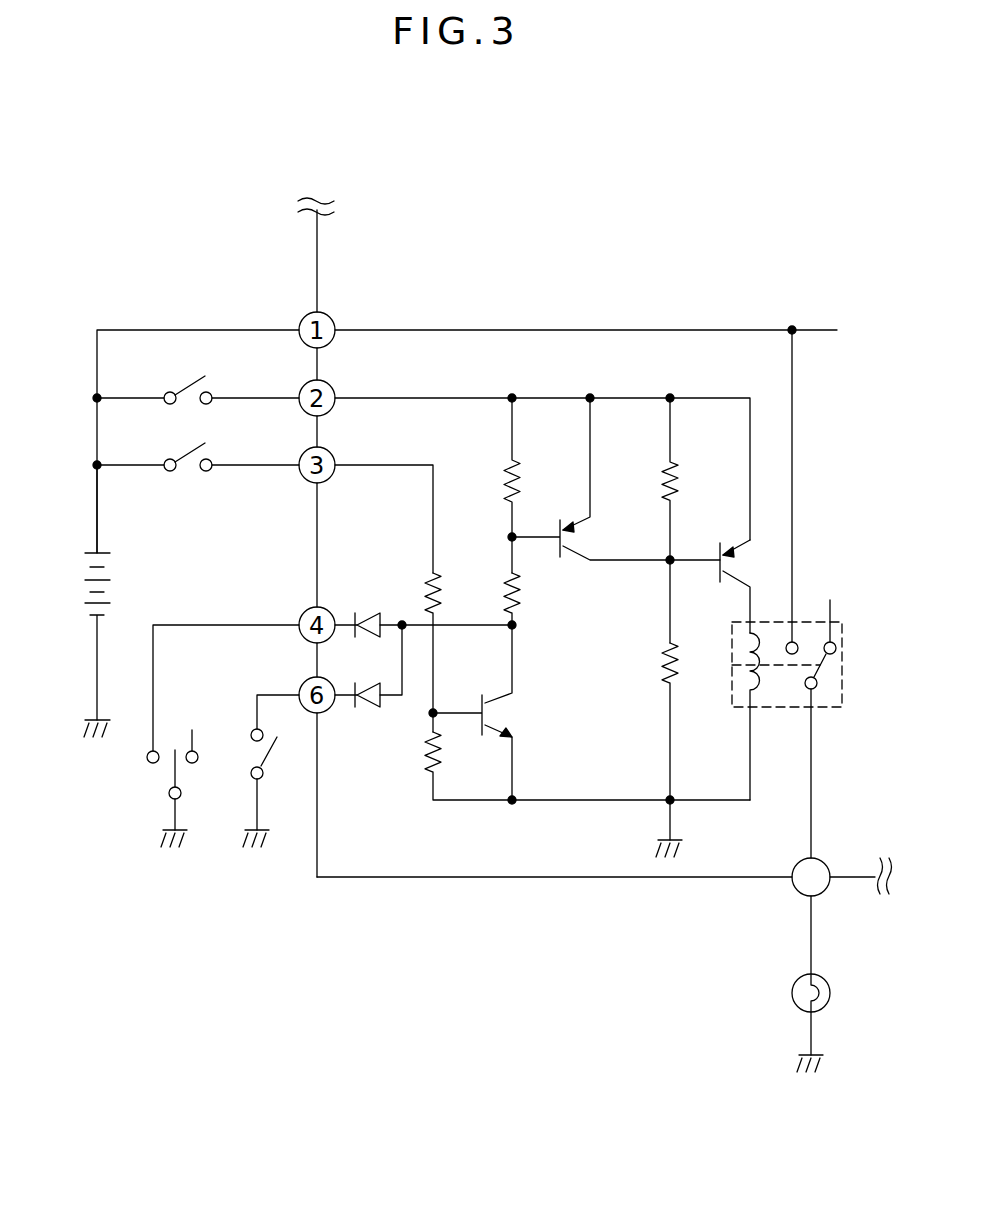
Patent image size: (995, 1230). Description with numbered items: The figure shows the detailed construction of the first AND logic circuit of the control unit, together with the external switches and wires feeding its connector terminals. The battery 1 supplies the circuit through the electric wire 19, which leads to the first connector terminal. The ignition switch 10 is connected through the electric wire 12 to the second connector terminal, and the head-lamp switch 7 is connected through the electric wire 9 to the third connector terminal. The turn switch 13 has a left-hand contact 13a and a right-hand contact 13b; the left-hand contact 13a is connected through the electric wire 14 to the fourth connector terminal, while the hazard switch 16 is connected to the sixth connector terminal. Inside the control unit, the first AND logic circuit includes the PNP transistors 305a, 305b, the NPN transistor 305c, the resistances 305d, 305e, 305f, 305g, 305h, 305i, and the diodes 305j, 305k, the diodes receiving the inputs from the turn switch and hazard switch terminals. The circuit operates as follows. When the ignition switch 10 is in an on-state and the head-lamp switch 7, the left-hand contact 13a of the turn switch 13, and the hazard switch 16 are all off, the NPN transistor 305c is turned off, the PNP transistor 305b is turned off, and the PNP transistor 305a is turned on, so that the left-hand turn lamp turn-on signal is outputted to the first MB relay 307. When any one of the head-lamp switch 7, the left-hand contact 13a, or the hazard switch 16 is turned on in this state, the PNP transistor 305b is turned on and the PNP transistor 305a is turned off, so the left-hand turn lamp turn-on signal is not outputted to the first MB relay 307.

The battery 1 is at (78, 586).
The head-lamp switch 7 is at (169, 458).
The electric wire 9 is at (259, 464).
The ignition switch 10 is at (169, 390).
The electric wire 12 is at (258, 397).
The turn switch 13 is at (168, 768).
The left-hand contact 13a is at (149, 766).
The right-hand contact 13b is at (201, 756).
The electric wire 14 is at (216, 625).
The hazard switch 16 is at (276, 756).
The electric wire 19 is at (256, 329).
The PNP transistor 305a is at (722, 547).
The PNP transistor 305b is at (561, 518).
The NPN transistor 305c is at (503, 718).
The resistance 305d is at (660, 485).
The resistance 305e is at (658, 665).
The resistance 305f is at (500, 482).
The resistance 305g is at (527, 597).
The resistance 305h is at (453, 592).
The resistance 305i is at (420, 752).
The diode 305j is at (368, 611).
The diode 305k is at (369, 706).
The first MB relay 307 is at (820, 708).